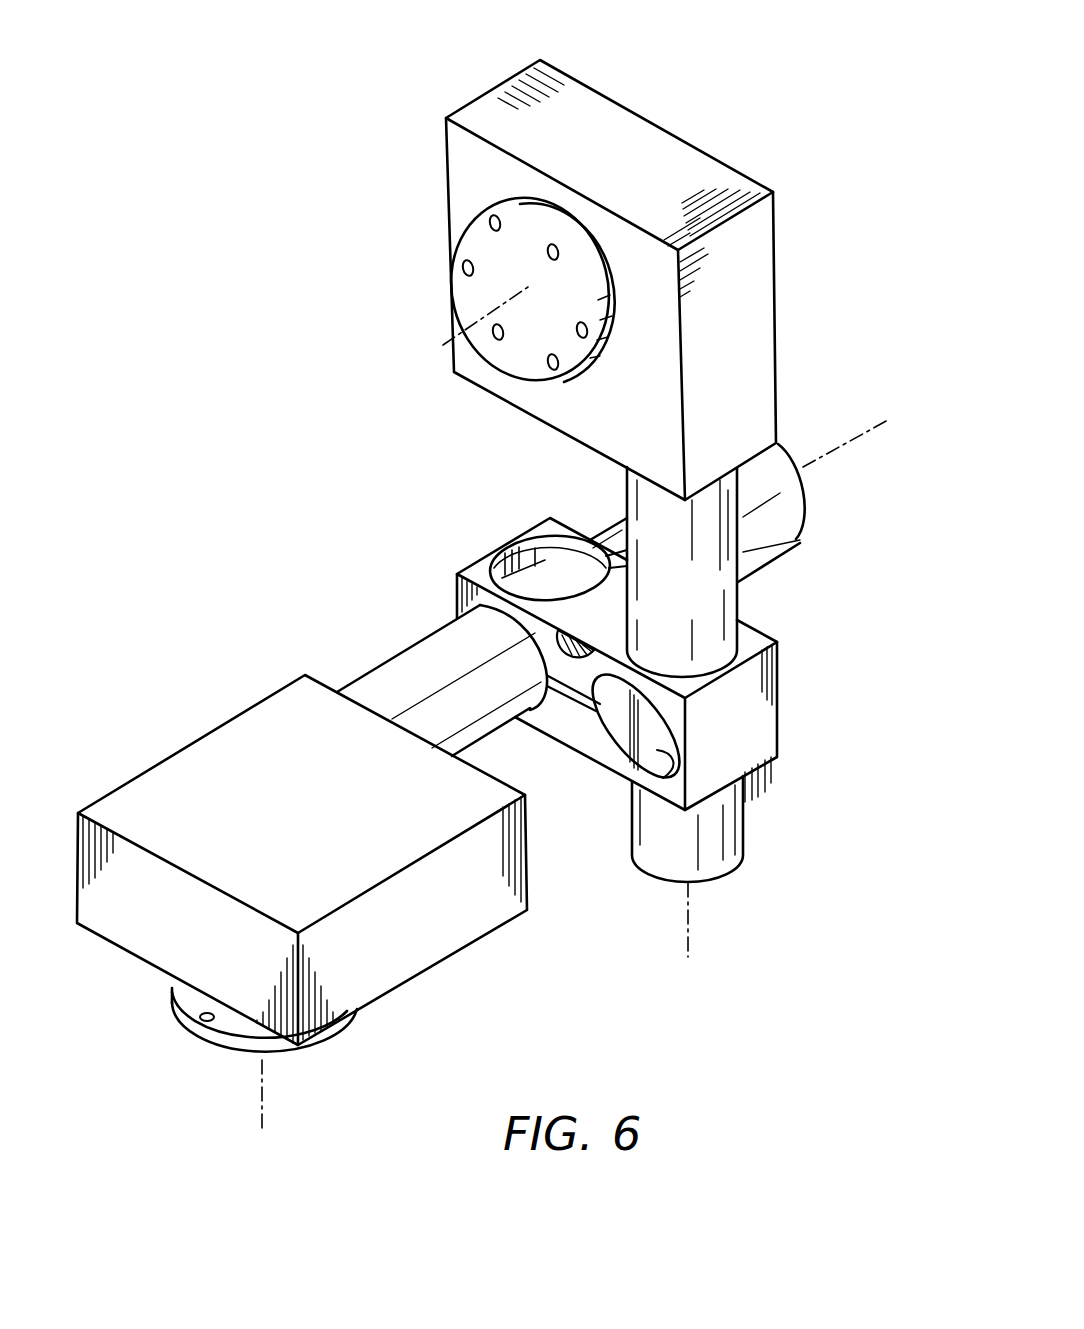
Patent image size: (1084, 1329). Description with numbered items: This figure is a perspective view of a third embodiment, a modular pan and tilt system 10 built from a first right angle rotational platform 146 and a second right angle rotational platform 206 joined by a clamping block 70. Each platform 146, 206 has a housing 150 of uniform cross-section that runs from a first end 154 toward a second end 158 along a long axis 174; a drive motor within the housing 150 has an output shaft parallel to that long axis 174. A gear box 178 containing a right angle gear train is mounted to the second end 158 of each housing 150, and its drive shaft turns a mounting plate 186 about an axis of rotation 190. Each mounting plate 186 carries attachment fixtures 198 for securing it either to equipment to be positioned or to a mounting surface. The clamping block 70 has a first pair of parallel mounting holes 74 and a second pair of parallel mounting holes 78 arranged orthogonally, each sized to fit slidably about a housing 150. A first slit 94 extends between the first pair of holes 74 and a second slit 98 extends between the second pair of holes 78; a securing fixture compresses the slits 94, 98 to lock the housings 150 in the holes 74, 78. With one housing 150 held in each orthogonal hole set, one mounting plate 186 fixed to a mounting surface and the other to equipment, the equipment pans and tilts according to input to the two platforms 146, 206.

The mounting apparatus 10 is at (862, 302).
The clamping block 70 is at (760, 706).
The first pair of parallel mounting holes 74 is at (522, 552).
The second pair of parallel mounting holes 78 is at (655, 748).
The first slit 94 is at (620, 558).
The second slit 98 is at (580, 697).
The first right angle rotational platform 146 is at (800, 253).
The housing 150 is at (403, 660).
The first end 154 is at (817, 513).
The second end 158 is at (718, 492).
The long axis 174 is at (860, 425).
The gear box 178 is at (730, 178).
The mounting plate 186 is at (520, 235).
The axis of rotation 190 is at (456, 338).
The attachment fixture 198 is at (553, 250).
The second right angle rotational platform 206 is at (505, 951).